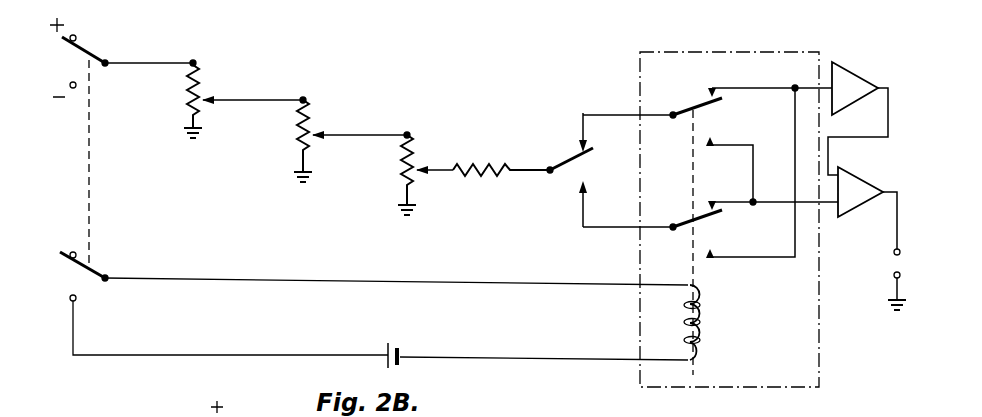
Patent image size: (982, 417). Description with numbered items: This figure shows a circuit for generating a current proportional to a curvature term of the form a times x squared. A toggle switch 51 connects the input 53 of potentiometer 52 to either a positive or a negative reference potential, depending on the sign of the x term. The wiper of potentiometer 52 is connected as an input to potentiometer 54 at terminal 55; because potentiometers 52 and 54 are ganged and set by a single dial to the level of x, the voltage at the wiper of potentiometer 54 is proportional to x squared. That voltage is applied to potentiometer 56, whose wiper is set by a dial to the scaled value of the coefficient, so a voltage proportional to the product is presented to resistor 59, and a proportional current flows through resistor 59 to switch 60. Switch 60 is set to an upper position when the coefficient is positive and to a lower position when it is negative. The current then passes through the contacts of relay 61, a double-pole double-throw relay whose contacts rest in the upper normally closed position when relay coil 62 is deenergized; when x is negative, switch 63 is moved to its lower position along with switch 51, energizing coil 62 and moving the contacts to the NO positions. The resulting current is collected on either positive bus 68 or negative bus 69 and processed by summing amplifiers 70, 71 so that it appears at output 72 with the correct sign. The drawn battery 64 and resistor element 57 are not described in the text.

The toggle switch 51 is at (90, 42).
The potentiometer 52 is at (190, 107).
The input of potentiometer 53 is at (187, 60).
The potentiometer 54 is at (298, 142).
The terminal 55 is at (302, 96).
The potentiometer 56 is at (402, 177).
The potentiometer 57 is at (402, 130).
The resistor 59 is at (483, 160).
The switch 60 is at (567, 158).
The relay 61 is at (658, 50).
The relay coil 62 is at (705, 315).
The switch 63 is at (77, 267).
The battery 64 is at (402, 347).
The positive bus 68 is at (827, 85).
The negative bus 69 is at (828, 205).
The summing amplifier 70 is at (863, 72).
The summing amplifier 71 is at (863, 170).
The output 72 is at (892, 254).